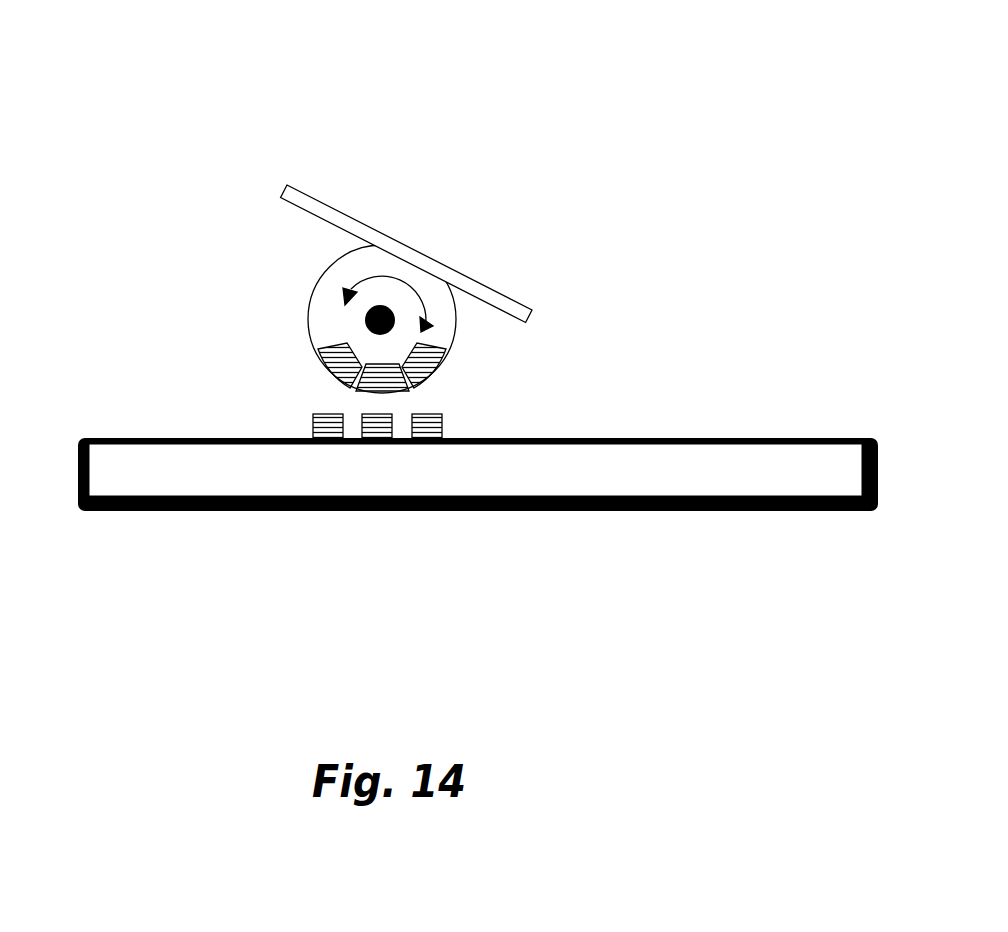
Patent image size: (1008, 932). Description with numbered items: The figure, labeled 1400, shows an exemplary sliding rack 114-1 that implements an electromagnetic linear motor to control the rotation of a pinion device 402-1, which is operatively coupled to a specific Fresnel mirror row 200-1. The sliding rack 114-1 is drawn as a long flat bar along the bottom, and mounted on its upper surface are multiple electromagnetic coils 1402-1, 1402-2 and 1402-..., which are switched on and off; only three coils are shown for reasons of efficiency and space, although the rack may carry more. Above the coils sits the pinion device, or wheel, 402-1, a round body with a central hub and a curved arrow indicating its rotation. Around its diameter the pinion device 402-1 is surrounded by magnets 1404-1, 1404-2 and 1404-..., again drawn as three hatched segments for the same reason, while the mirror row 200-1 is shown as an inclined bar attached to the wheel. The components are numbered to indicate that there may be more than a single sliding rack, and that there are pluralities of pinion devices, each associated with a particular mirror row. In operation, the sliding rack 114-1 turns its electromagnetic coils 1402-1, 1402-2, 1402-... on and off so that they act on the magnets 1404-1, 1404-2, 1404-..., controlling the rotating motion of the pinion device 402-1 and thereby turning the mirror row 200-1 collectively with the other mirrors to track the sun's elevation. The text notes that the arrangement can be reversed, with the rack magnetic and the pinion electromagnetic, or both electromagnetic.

The printing system arrangement 1400 is at (423, 25).
The sliding rack 114-1 is at (140, 443).
The Fresnel mirror row 200-1 is at (467, 277).
The pinion device 402-1 is at (342, 262).
The magnet 1404-1 is at (317, 352).
The magnet 1404-2 is at (392, 363).
The magnet 1404-... is at (440, 368).
The electromagnetic coil 1402-1 is at (313, 418).
The electromagnetic coil 1402-2 is at (378, 431).
The electromagnetic coil 1402-... is at (432, 431).